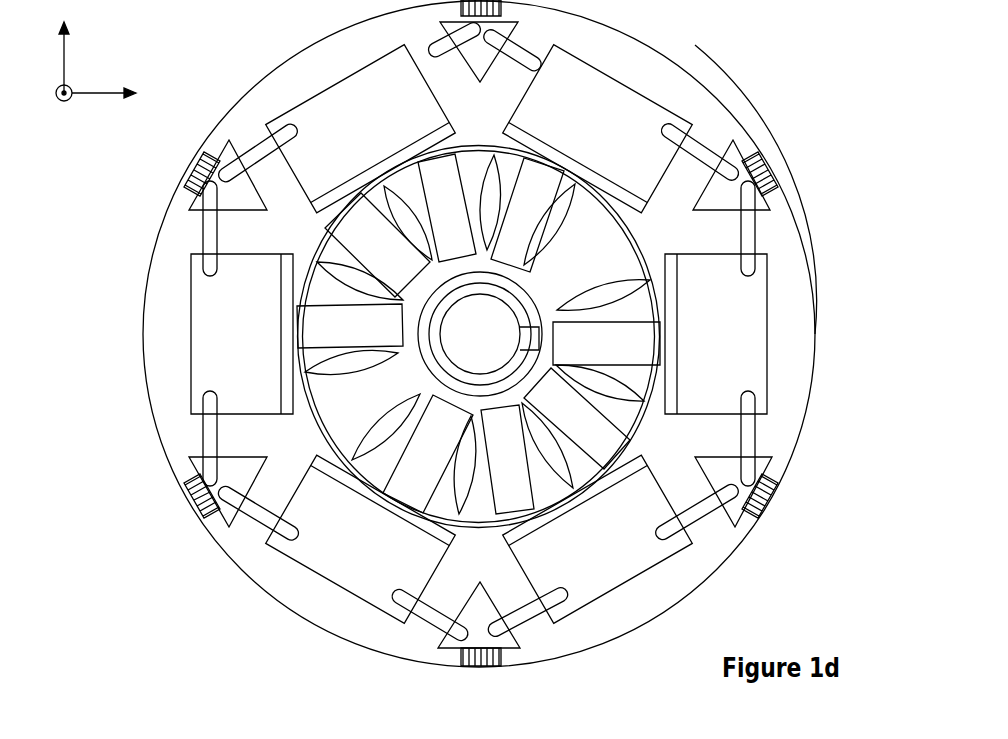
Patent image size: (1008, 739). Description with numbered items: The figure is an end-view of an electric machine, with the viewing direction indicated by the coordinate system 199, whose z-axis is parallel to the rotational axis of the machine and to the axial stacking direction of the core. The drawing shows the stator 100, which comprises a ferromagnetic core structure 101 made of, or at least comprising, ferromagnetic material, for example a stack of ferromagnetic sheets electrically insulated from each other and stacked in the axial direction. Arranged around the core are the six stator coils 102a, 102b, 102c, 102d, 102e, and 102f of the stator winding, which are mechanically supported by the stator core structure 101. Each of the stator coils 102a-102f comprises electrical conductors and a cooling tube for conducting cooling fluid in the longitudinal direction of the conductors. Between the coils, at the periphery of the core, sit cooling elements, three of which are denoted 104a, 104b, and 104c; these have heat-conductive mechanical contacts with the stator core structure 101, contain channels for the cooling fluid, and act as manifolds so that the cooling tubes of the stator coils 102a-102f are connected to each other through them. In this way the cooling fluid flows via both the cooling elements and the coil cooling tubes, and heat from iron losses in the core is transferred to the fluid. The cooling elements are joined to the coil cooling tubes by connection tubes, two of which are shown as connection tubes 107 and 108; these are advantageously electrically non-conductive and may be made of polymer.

The stator 100 is at (788, 97).
The ferromagnetic core structure 101 is at (662, 84).
The stator coil 102a is at (627, 136).
The stator coil 102b is at (747, 343).
The stator coil 102c is at (623, 558).
The stator coil 102d is at (385, 550).
The stator coil 102e is at (263, 351).
The stator coil 102f is at (386, 139).
The cooling element 104a is at (503, 27).
The cooling element 104b is at (215, 178).
The cooling element 104c is at (745, 487).
The connection tube 107 is at (532, 52).
The connection tube 108 is at (460, 48).
The coordinate system 199 is at (118, 72).